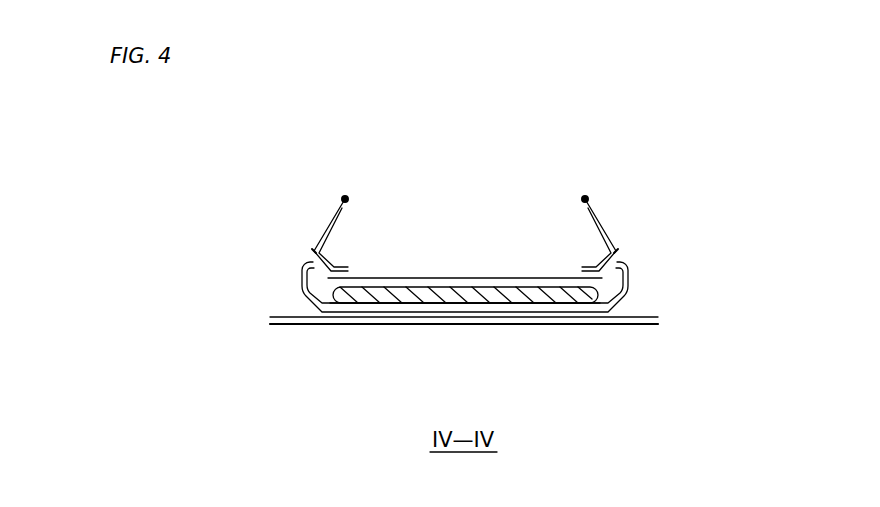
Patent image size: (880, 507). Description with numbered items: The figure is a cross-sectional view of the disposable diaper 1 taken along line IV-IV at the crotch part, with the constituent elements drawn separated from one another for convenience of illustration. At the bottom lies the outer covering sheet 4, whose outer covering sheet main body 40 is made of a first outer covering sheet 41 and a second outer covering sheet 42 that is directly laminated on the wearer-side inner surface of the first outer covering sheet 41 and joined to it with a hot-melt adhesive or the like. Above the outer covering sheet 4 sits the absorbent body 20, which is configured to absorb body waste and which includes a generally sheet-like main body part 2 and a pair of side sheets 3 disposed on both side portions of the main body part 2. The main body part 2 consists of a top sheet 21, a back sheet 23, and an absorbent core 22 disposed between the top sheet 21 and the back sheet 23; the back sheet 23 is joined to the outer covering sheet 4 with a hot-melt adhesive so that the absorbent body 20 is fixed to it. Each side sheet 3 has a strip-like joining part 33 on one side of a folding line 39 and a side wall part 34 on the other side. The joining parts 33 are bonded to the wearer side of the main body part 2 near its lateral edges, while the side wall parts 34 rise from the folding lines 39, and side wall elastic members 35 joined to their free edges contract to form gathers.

The disposable diaper 1 is at (250, 142).
The main body part 2 is at (448, 375).
The absorbent body 20 is at (340, 447).
The top sheet 21 is at (421, 278).
The absorbent core 22 is at (456, 296).
The back sheet 23 is at (492, 313).
The side sheet 3 is at (464, 266).
The joining part 33 is at (348, 298).
The side wall part 34 is at (320, 240).
The side wall elastic member 35 is at (343, 199).
The folding line 39 is at (310, 257).
The outer covering sheet 4 is at (426, 397).
The outer covering sheet main body 40 is at (447, 375).
The first outer covering sheet 41 is at (317, 326).
The second outer covering sheet 42 is at (290, 318).